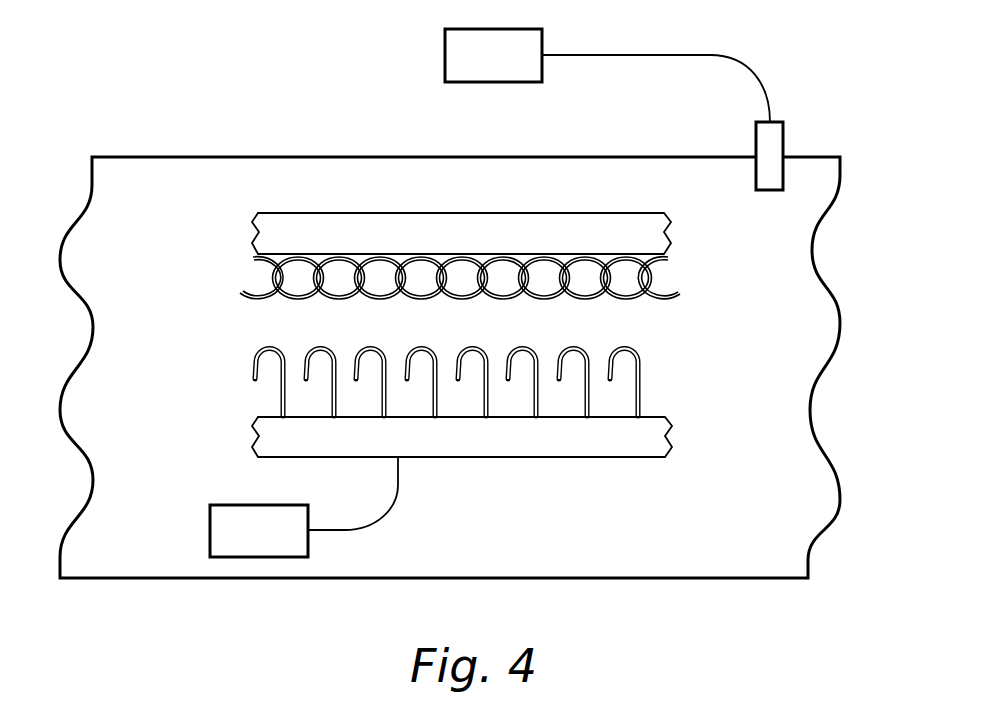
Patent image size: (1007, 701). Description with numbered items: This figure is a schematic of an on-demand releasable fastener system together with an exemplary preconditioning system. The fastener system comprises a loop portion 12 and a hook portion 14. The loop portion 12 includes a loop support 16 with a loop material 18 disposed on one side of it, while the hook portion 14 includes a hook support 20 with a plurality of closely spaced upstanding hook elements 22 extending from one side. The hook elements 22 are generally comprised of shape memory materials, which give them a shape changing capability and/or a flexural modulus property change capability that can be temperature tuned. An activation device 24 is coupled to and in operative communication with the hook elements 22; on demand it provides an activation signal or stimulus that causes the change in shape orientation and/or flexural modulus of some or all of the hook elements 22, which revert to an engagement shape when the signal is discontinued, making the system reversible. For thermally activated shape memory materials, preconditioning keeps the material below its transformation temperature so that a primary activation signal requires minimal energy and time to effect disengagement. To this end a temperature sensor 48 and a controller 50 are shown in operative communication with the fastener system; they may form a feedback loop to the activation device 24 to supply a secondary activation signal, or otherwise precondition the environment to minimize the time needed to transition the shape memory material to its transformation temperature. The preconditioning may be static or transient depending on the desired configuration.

The loop portion 12 is at (437, 252).
The hook portion 14 is at (431, 433).
The loop support 16 is at (458, 222).
The loop material 18 is at (610, 300).
The hook support 20 is at (545, 442).
The hook elements 22 is at (648, 368).
The activation device 24 is at (210, 538).
The temperature sensor 48 is at (783, 140).
The controller 50 is at (445, 55).